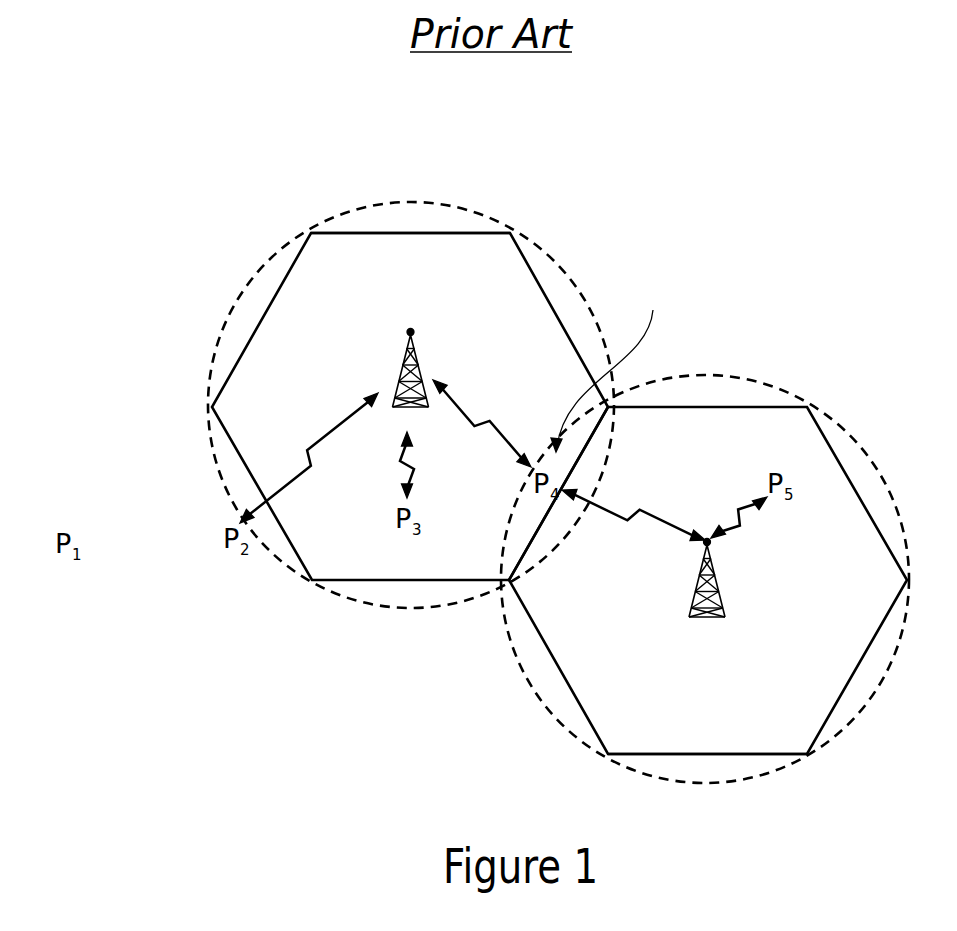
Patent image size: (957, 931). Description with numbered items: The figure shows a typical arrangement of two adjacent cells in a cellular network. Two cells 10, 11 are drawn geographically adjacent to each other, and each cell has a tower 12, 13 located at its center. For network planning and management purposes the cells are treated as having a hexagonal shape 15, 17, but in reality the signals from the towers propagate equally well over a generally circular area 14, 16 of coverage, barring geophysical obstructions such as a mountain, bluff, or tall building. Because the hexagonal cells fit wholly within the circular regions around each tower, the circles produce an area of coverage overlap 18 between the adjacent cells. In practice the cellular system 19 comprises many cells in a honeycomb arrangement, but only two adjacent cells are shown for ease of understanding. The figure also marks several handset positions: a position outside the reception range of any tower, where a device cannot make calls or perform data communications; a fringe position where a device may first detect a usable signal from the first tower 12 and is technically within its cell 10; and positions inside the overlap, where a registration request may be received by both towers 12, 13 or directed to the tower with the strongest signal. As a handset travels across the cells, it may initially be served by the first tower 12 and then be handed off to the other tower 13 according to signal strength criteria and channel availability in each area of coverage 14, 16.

The cell 10 is at (348, 268).
The cell 11 is at (803, 443).
The tower 12 is at (420, 360).
The tower 13 is at (728, 600).
The circular area of coverage 14 is at (558, 262).
The hexagonal shape 15 is at (453, 236).
The circular area of coverage 16 is at (860, 455).
The hexagonal shape 17 is at (735, 753).
The area of coverage overlap 18 is at (613, 367).
The cellular system 19 is at (190, 222).